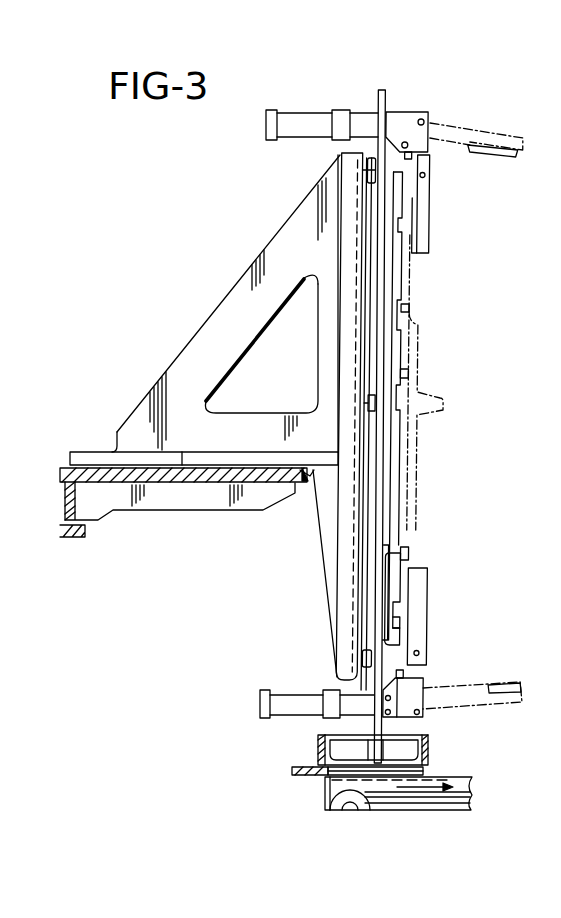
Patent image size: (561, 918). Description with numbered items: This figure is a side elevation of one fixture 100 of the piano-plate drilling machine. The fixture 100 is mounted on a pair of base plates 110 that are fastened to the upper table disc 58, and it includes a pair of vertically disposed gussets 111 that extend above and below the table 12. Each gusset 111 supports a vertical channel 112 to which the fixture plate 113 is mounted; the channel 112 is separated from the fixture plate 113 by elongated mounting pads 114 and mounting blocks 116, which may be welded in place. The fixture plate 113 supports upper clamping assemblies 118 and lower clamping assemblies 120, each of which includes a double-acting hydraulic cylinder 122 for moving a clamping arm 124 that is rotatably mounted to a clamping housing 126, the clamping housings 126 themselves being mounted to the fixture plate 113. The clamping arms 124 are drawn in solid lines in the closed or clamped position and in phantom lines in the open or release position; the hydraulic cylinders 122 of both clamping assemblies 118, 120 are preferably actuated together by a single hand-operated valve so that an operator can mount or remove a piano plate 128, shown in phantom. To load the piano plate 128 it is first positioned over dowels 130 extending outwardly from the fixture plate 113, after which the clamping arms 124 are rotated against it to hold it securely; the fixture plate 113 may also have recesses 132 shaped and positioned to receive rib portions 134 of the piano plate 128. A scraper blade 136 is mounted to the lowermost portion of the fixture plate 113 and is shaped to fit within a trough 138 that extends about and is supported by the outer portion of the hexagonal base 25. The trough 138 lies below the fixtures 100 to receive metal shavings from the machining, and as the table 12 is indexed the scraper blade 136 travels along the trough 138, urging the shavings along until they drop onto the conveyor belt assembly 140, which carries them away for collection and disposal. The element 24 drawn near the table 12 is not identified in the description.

The table 12 is at (193, 516).
The guide member 24 is at (308, 480).
The hexagonal base 25 is at (292, 769).
The upper table disc 58 is at (89, 477).
The fixture 100 is at (173, 345).
The base plates 110 is at (138, 452).
The gussets 111 is at (207, 329).
The vertical channel 112 is at (350, 218).
The fixture plate 113 is at (386, 268).
The elongated mounting pads 114 is at (370, 193).
The mounting blocks 116 is at (369, 168).
The upper clamping assemblies 118 is at (383, 92).
The lower clamping assemblies 120 is at (256, 702).
The double-acting hydraulic cylinder 122 is at (292, 124).
The clamping arm 124 is at (487, 130).
The clamping housing 126 is at (408, 116).
The piano plate 128 is at (424, 490).
The dowels 130 is at (411, 307).
The recesses 132 is at (399, 566).
The rib portions 134 is at (433, 582).
The scraper blade 136 is at (340, 745).
The trough 138 is at (326, 760).
The conveyor belt assembly 140 is at (322, 787).